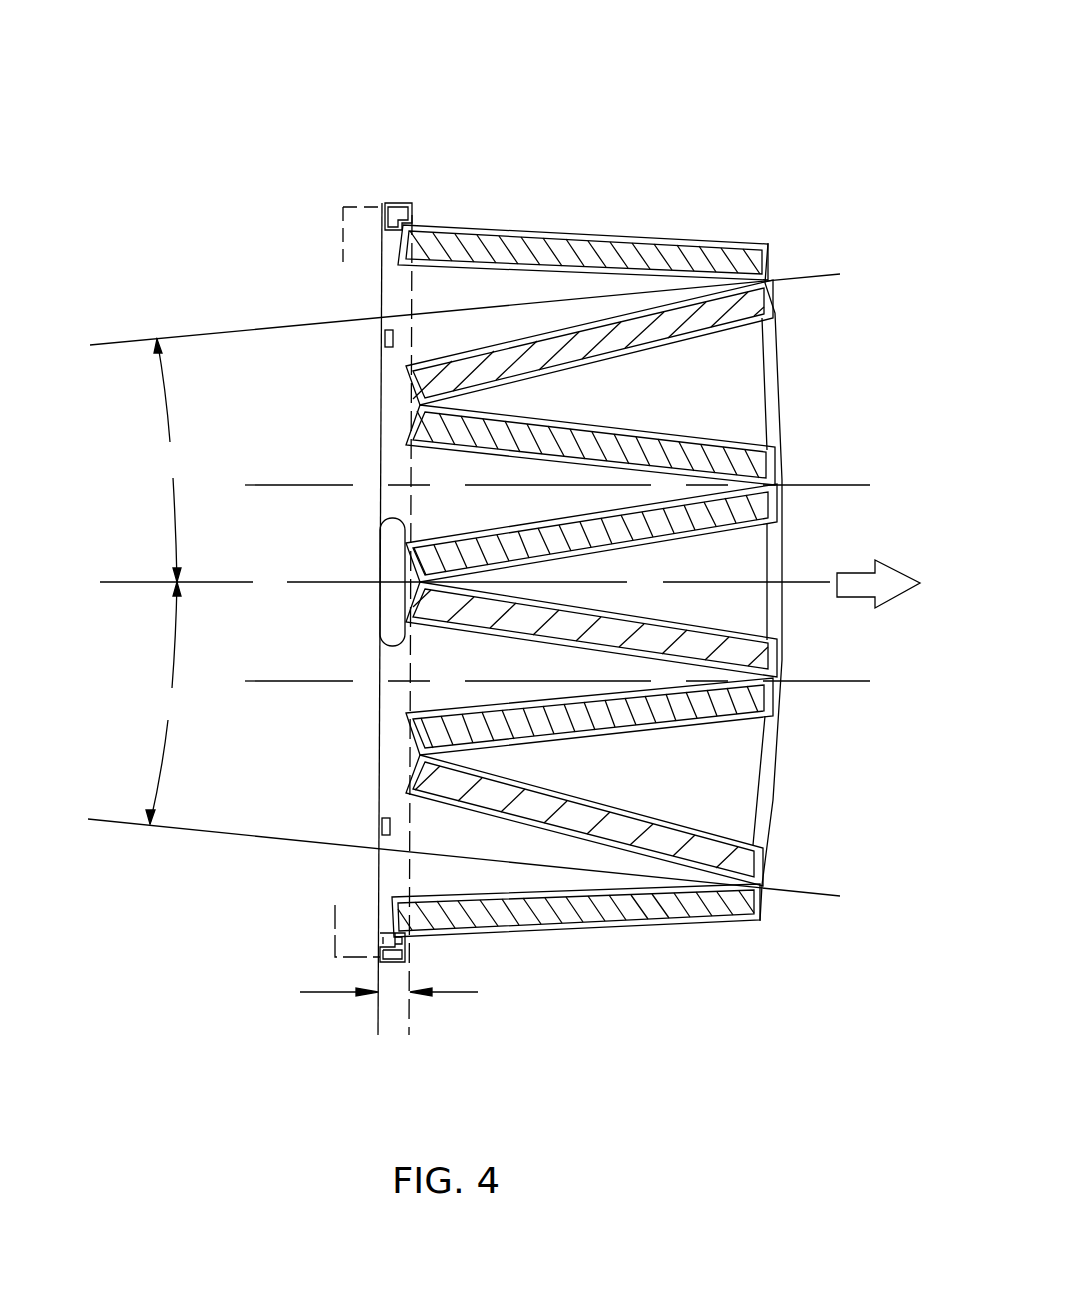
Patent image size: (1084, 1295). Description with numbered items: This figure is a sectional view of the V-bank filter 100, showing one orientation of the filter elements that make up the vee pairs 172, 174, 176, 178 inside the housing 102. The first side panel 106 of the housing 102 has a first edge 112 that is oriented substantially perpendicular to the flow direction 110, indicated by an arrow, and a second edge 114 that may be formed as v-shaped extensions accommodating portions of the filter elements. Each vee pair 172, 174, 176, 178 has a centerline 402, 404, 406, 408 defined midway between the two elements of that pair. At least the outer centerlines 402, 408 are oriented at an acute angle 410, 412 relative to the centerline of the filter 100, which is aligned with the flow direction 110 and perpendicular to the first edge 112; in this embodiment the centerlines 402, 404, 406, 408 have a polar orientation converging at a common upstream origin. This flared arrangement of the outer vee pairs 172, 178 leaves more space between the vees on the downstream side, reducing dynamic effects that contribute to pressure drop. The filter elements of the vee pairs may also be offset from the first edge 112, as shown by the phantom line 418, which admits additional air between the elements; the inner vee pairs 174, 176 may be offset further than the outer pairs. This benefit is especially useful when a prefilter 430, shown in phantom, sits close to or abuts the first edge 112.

The V-bank filter 100 is at (572, 123).
The housing 102 is at (398, 192).
The first side panel 106 is at (398, 297).
The flow direction 110 is at (853, 597).
The first edge 112 is at (396, 781).
The second edge 114 is at (778, 788).
The vee pair 172 is at (622, 930).
The vee pair 174 is at (620, 740).
The vee pair 176 is at (635, 422).
The vee pair 178 is at (642, 225).
The centerline 402 is at (302, 842).
The centerline 404 is at (296, 683).
The centerline 406 is at (292, 487).
The centerline 408 is at (298, 323).
The acute angle 410 is at (167, 703).
The acute angle 412 is at (169, 460).
The phantom line 418 is at (410, 1003).
The prefilter 430 is at (337, 943).